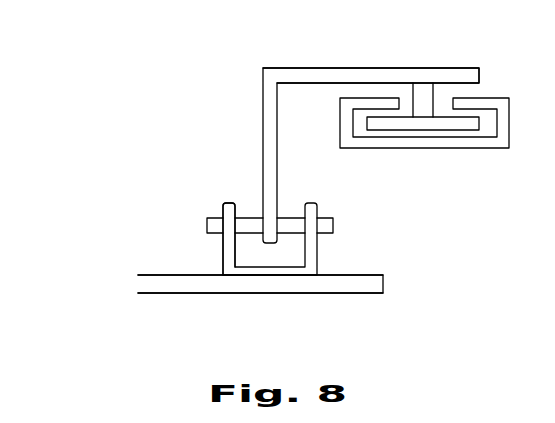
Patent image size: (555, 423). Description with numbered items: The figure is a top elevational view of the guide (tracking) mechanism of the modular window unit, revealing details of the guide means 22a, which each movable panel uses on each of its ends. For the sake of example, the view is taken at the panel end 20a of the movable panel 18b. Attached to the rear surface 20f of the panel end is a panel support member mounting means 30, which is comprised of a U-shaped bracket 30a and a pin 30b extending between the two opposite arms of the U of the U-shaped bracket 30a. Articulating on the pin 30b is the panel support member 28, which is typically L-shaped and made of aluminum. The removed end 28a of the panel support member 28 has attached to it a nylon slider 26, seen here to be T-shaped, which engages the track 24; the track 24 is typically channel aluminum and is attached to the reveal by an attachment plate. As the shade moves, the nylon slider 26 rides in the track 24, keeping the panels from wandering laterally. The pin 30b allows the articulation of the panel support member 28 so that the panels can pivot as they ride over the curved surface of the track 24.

The movable panel 18b is at (238, 293).
The panel end 20a is at (300, 293).
The rear surface 20f is at (343, 276).
The guide means 22a is at (136, 229).
The track 24 is at (447, 148).
The nylon slider 26 is at (412, 130).
The panel support member 28 is at (262, 158).
The removed end 28a is at (413, 68).
The panel support member mounting means 30 is at (352, 225).
The U-shaped bracket 30a is at (223, 250).
The pin 30b is at (207, 223).